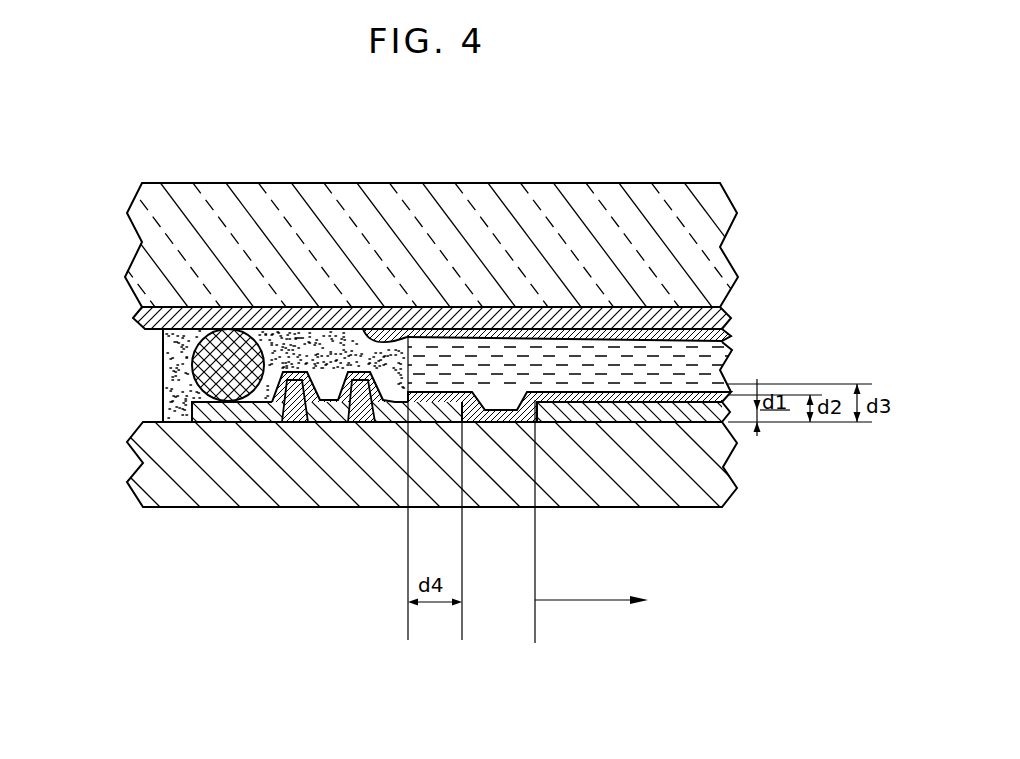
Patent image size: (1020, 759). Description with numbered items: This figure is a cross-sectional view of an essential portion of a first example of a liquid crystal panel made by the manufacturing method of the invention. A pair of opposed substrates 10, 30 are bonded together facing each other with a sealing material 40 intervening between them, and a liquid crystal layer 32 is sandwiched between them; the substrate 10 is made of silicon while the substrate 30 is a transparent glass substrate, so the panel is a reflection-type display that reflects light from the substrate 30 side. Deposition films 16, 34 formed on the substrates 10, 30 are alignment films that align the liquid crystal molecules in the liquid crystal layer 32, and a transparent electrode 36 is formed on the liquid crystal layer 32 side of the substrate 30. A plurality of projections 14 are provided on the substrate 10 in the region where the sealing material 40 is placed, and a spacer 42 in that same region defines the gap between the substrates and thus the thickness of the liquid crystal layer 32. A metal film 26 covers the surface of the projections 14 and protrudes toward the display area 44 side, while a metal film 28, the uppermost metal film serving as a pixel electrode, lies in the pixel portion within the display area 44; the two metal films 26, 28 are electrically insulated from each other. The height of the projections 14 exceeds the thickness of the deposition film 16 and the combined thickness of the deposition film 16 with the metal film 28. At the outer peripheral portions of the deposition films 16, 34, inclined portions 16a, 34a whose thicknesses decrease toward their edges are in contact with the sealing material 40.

The substrate 10 is at (697, 467).
The projections 14 is at (355, 412).
The deposition film 16 is at (578, 418).
The inclined portion 16a is at (390, 405).
The metal film 26 is at (230, 417).
The metal film 28 is at (657, 417).
The substrate 30 is at (713, 222).
The liquid crystal layer 32 is at (723, 363).
The deposition film 34 is at (723, 337).
The inclined portion 34a is at (363, 329).
The transparent electrode 36 is at (723, 317).
The sealing material 40 is at (173, 347).
The spacer 42 is at (193, 375).
The display area 44 is at (629, 521).